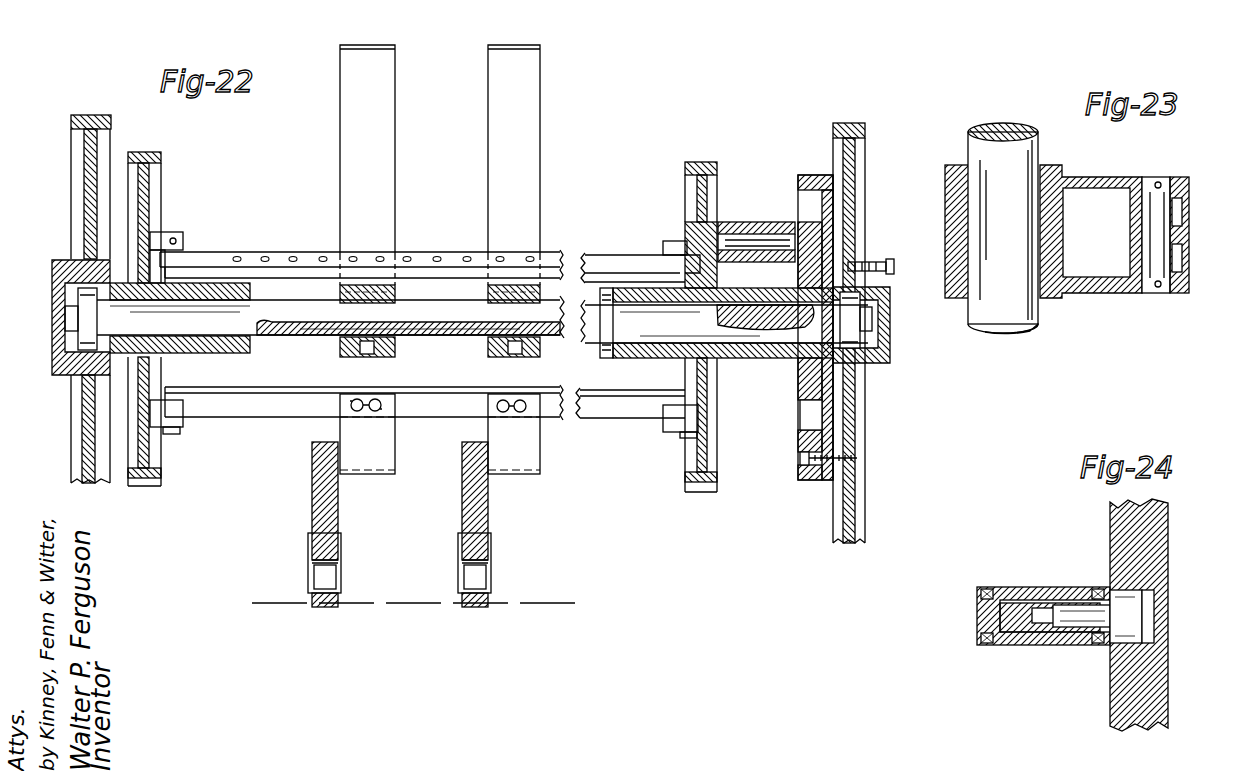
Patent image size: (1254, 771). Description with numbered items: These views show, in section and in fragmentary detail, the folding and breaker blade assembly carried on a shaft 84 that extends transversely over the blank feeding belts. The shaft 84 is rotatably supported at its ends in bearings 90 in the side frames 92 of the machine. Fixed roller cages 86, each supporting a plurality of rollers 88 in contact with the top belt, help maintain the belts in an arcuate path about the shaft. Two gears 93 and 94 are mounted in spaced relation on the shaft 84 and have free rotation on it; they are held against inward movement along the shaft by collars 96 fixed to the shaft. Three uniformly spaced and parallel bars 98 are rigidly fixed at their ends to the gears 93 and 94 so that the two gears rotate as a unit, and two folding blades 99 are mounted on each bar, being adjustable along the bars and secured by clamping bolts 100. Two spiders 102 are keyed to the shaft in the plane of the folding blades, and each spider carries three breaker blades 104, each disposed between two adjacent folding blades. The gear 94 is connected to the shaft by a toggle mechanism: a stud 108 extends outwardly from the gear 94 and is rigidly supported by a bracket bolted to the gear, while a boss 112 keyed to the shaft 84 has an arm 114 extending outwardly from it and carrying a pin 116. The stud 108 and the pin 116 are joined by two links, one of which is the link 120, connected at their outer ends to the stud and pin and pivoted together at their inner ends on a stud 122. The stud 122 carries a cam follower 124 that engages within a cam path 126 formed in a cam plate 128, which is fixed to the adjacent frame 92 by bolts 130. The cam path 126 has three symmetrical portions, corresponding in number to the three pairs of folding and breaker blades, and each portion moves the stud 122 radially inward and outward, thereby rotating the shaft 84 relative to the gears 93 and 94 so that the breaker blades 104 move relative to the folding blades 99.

In FIG. 22, the shaft 84 is at (565, 300).
In FIG. 23, the shaft 84 is at (1036, 316).
In FIG. 22, the fixed roller cages 86 is at (322, 510).
In FIG. 22, the rollers 88 is at (318, 578).
In FIG. 22, the bearings 90 is at (52, 305).
In FIG. 22, the side frames 92 is at (92, 115).
In FIG. 22, the gear 93 is at (161, 153).
In FIG. 22, the gear 94 is at (706, 160).
In FIG. 22, the collars 96 is at (250, 353).
In FIG. 22, the bars 98 is at (242, 254).
In FIG. 22, the folding blades 99 is at (497, 430).
In FIG. 22, the clamping bolts 100 is at (362, 398).
In FIG. 22, the spiders 102 is at (395, 349).
In FIG. 22, the breaker blades 104 is at (488, 46).
In FIG. 22, the stud 108 is at (748, 238).
In FIG. 23, the boss 112 is at (957, 238).
In FIG. 23, the arm 114 is at (1122, 296).
In FIG. 23, the pin 116 is at (1159, 181).
In FIG. 23, the link 120 is at (1189, 250).
In FIG. 24, the link 120 is at (1108, 588).
In FIG. 24, the stud 122 is at (990, 612).
In FIG. 24, the cam follower 124 is at (1135, 613).
In FIG. 22, the cam path 126 is at (812, 414).
In FIG. 24, the cam path 126 is at (1152, 625).
In FIG. 22, the cam plate 128 is at (806, 175).
In FIG. 24, the cam plate 128 is at (1160, 562).
In FIG. 22, the bolts 130 is at (857, 438).